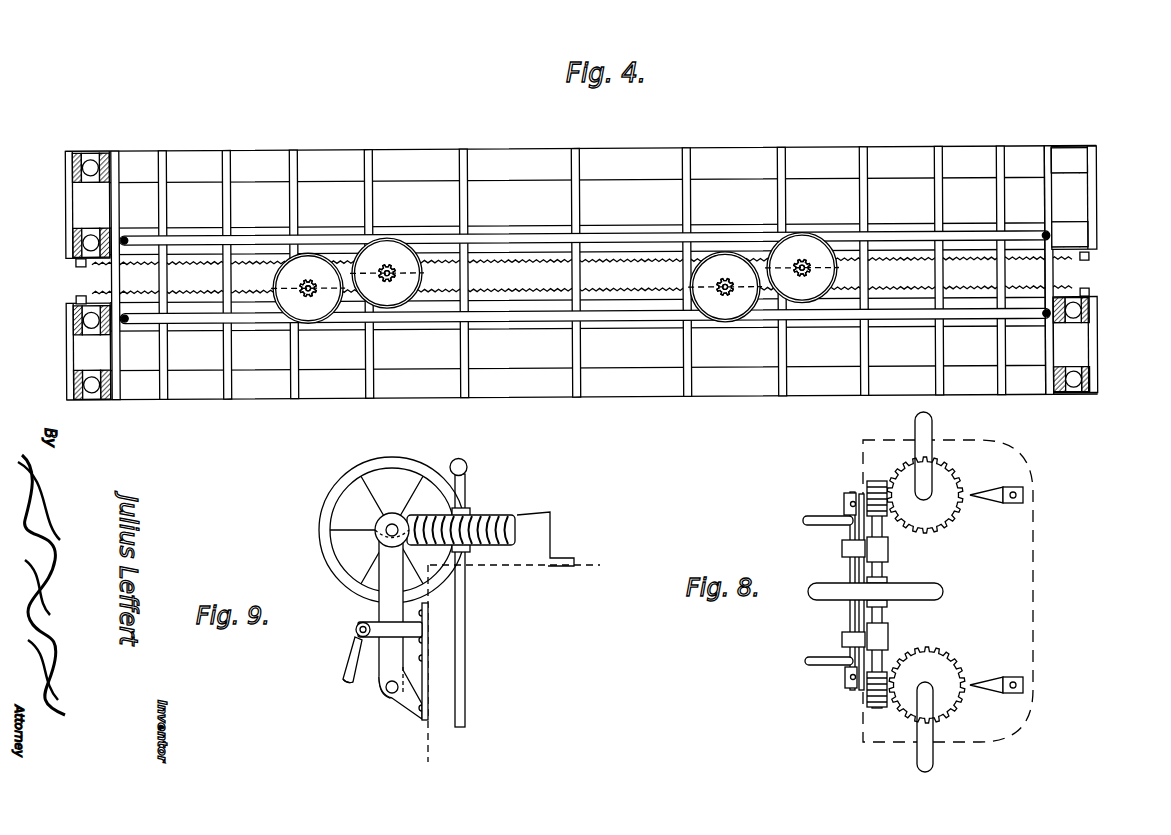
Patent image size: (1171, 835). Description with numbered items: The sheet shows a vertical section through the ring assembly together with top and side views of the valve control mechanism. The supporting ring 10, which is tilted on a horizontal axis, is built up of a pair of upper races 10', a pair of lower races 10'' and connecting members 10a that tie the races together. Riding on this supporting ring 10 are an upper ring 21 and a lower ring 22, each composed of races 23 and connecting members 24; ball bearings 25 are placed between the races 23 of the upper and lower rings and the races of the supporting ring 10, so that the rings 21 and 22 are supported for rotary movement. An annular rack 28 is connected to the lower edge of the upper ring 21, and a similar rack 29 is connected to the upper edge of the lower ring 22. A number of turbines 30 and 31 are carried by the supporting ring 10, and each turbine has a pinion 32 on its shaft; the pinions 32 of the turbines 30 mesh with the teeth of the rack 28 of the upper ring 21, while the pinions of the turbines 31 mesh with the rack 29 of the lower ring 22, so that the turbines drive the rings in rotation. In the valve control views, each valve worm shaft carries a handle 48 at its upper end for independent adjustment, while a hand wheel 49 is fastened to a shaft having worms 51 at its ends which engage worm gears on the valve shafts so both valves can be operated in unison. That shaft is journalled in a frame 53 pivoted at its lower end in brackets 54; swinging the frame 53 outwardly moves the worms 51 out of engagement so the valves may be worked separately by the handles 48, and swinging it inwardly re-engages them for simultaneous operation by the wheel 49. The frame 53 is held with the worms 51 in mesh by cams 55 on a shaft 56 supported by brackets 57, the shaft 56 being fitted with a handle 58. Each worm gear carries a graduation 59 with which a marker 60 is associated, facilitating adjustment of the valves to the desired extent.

In FIG. 4, the supporting ring 10 is at (581, 244).
In FIG. 4, the upper races 10' is at (1094, 170).
In FIG. 4, the lower races 10'' is at (1050, 289).
In FIG. 4, the connecting members 10a is at (997, 352).
In FIG. 4, the upper ring 21 is at (1094, 230).
In FIG. 4, the lower ring 22 is at (1094, 344).
In FIG. 4, the races 23 is at (1093, 154).
In FIG. 4, the connecting members 24 is at (1093, 197).
In FIG. 4, the ball bearings 25 is at (1074, 158).
In FIG. 4, the annular rack 28 is at (1089, 259).
In FIG. 4, the rack 29 is at (1089, 294).
In FIG. 4, the turbines 30 is at (398, 255).
In FIG. 4, the turbines 31 is at (300, 312).
In FIG. 4, the pinion 32 is at (393, 290).
In FIG. 9, the handle 48 is at (467, 464).
In FIG. 8, the handle 48 is at (935, 760).
In FIG. 9, the hand wheel 49 is at (358, 474).
In FIG. 9, the worms 51 is at (378, 543).
In FIG. 8, the worms 51 is at (867, 485).
In FIG. 9, the frame 53 is at (380, 610).
In FIG. 8, the frame 53 is at (884, 635).
In FIG. 9, the brackets 54 is at (412, 697).
In FIG. 9, the cams 55 is at (355, 658).
In FIG. 8, the cams 55 is at (842, 548).
In FIG. 9, the shaft 56 is at (355, 637).
In FIG. 9, the brackets 57 is at (415, 629).
In FIG. 8, the brackets 57 is at (847, 679).
In FIG. 9, the handle 58 is at (348, 684).
In FIG. 8, the handle 58 is at (810, 517).
In FIG. 9, the graduation 59 is at (497, 517).
In FIG. 8, the graduation 59 is at (953, 522).
In FIG. 9, the marker 60 is at (552, 530).
In FIG. 8, the marker 60 is at (1013, 505).